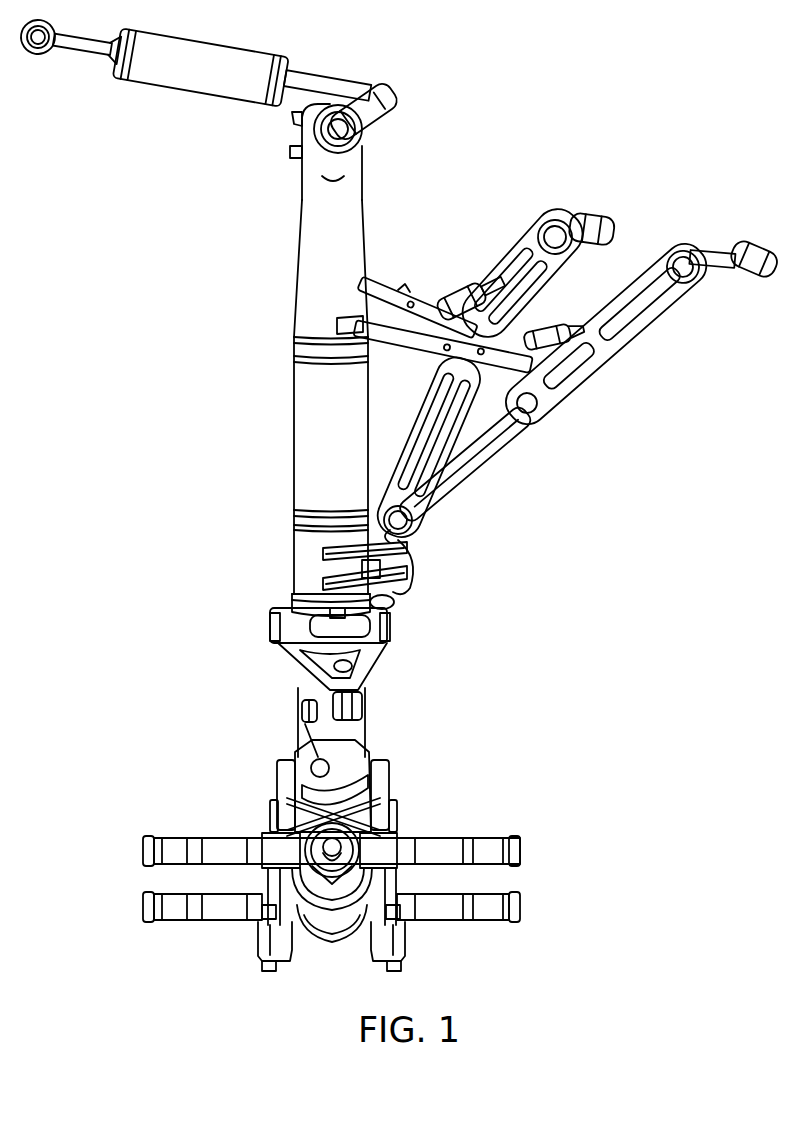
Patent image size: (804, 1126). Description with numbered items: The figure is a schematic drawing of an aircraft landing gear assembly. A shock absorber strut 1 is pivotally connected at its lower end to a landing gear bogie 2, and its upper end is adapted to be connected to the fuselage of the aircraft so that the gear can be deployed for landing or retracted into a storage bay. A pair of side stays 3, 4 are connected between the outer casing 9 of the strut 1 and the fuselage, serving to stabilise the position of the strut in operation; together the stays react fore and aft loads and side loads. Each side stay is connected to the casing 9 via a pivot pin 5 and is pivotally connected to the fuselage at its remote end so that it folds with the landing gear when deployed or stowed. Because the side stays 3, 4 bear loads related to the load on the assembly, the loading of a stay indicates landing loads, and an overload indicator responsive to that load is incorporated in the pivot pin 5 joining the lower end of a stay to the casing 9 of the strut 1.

The shock absorber strut 1 is at (294, 447).
The landing gear bogie 2 is at (420, 817).
The side stay 3 is at (630, 359).
The side stay 4 is at (496, 266).
The pivot pin 5 is at (404, 523).
The outer casing 9 is at (310, 400).